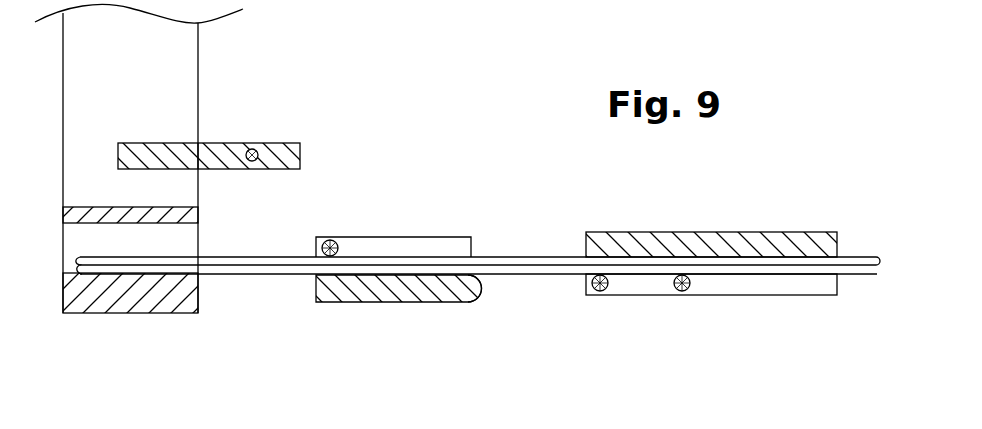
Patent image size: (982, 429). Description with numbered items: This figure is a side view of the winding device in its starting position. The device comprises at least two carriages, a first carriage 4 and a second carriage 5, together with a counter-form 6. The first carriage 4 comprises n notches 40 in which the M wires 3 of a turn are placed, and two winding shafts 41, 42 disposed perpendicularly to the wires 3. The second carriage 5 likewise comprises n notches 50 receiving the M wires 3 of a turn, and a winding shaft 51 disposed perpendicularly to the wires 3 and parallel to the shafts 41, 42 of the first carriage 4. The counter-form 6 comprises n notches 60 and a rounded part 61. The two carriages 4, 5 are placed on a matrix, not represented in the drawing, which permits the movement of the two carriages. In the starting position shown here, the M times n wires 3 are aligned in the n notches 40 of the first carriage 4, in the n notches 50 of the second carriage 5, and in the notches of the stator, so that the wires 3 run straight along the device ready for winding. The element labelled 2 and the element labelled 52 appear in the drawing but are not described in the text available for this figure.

The base block 2 is at (130, 296).
The wires 3 is at (256, 270).
The first carriage 4 is at (717, 242).
The notches 40 is at (780, 292).
The winding shaft 41 is at (608, 294).
The winding shaft 42 is at (692, 295).
The second carriage 5 is at (403, 288).
The notches 50 is at (418, 247).
The winding shaft 51 is at (333, 241).
The rounded end 52 is at (480, 290).
The counter-form 6 is at (213, 155).
The notches 60 is at (282, 152).
The rounded part 61 is at (258, 162).